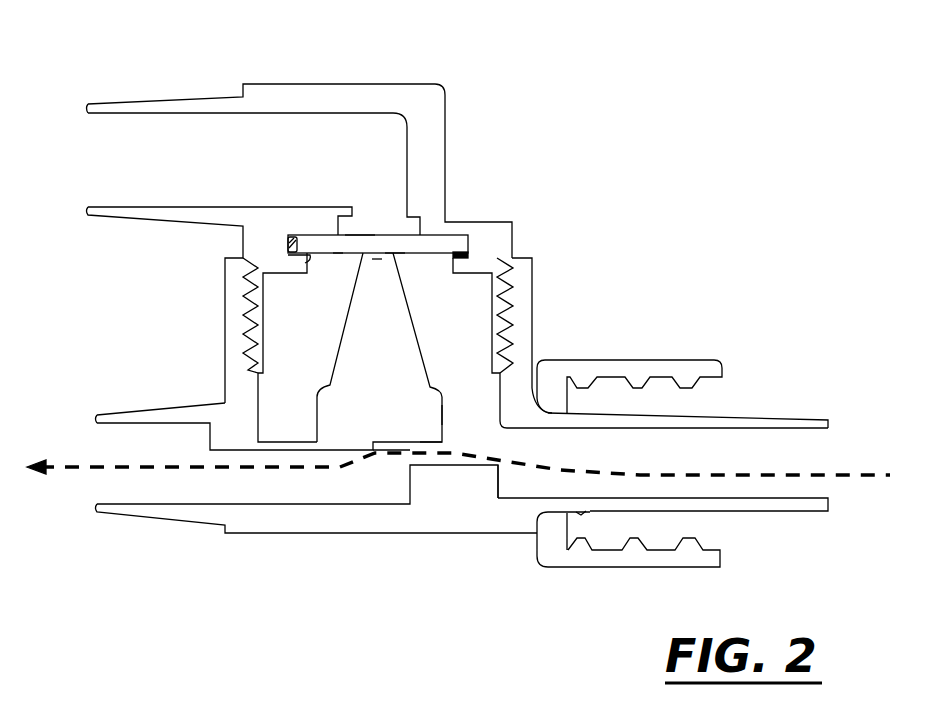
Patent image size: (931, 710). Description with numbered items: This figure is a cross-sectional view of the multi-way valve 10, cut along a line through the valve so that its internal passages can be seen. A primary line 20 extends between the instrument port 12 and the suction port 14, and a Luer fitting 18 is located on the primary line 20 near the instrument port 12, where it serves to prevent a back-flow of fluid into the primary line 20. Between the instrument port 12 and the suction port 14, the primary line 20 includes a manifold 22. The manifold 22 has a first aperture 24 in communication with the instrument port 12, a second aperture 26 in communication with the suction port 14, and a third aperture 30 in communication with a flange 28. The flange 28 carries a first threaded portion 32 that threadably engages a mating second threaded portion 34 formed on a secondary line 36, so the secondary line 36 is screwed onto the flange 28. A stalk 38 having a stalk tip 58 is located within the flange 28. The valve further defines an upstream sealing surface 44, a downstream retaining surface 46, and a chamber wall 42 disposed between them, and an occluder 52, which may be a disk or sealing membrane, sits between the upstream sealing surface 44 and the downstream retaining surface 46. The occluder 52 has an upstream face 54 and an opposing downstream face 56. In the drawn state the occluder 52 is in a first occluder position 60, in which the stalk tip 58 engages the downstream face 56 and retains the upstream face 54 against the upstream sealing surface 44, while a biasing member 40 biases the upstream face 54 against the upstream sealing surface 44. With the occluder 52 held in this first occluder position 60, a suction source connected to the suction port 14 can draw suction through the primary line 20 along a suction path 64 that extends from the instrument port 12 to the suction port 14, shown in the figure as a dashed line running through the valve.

The multi-way valve 10 is at (560, 118).
The instrument port 12 is at (810, 495).
The suction port 14 is at (120, 504).
The Luer fitting 18 is at (707, 557).
The primary line 20 is at (815, 428).
The manifold 22 is at (432, 443).
The first aperture 24 is at (513, 430).
The second aperture 26 is at (402, 455).
The flange 28 is at (243, 303).
The third aperture 30 is at (445, 413).
The first threaded portion 32 is at (247, 334).
The second threaded portion 34 is at (500, 363).
The secondary line 36 is at (405, 150).
The stalk 38 is at (366, 362).
The biasing member 40 is at (452, 256).
The chamber wall 42 is at (292, 236).
The upstream sealing surface 44 is at (313, 235).
The downstream retaining surface 46 is at (307, 258).
The occluder 52 is at (395, 243).
The upstream face 54 is at (360, 235).
The downstream face 56 is at (338, 253).
The stalk tip 58 is at (377, 260).
The first occluder position 60 is at (493, 190).
The suction path 64 is at (73, 455).